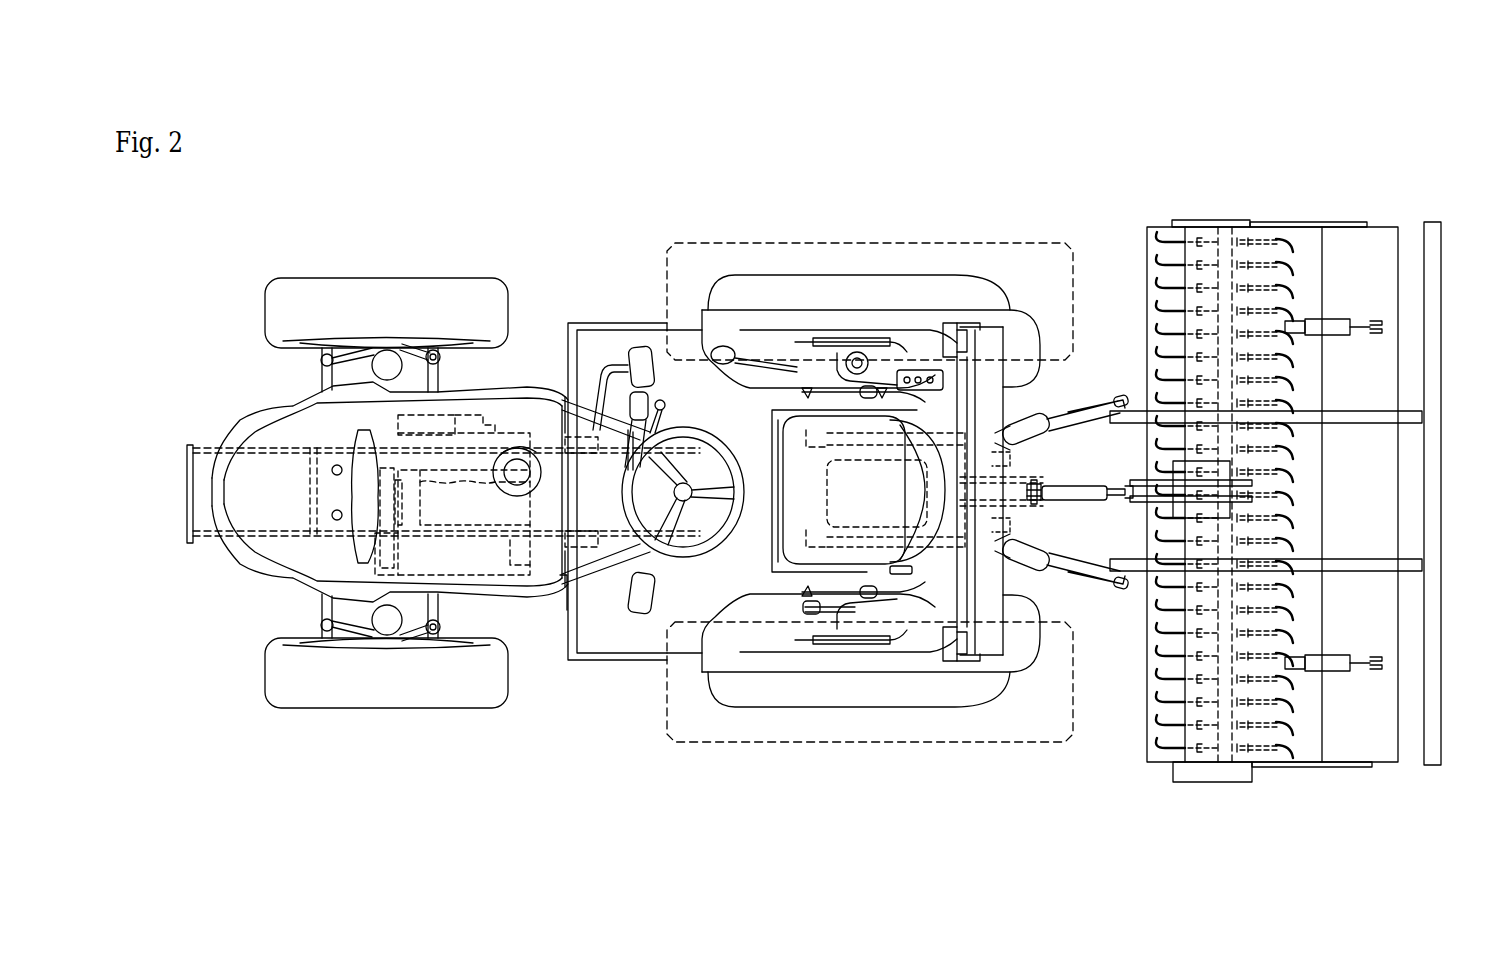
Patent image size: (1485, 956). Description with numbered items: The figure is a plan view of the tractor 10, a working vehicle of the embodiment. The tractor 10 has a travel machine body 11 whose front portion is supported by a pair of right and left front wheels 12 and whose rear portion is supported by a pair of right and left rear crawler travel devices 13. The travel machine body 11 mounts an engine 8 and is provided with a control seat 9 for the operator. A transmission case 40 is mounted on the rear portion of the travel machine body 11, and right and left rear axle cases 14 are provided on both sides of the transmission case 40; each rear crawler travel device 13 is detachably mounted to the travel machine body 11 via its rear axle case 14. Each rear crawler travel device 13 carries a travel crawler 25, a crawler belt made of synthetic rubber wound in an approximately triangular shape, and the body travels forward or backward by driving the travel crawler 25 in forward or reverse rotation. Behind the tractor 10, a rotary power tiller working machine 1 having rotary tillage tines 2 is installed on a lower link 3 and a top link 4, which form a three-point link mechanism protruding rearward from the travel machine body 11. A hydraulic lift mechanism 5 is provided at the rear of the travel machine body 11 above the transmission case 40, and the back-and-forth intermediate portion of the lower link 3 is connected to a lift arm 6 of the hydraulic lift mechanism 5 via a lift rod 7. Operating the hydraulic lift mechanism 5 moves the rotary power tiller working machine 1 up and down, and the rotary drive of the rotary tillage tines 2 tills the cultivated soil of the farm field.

The rotary power tiller working machine 1 is at (1292, 212).
The rotary tillage tine 2 is at (1168, 238).
The lower link 3 is at (1093, 405).
The top link 4 is at (1080, 489).
The hydraulic lift mechanism 5 is at (847, 497).
The lift arm 6 is at (1003, 462).
The lift rod 7 is at (1046, 427).
The engine 8 is at (485, 518).
The control seat 9 is at (784, 423).
The tractor 10 is at (598, 188).
The travel machine body 11 is at (549, 322).
The front wheels 12 is at (378, 292).
The rear crawler travel devices 13 is at (975, 262).
The rear axle case 14 is at (943, 412).
The travel crawler 25 is at (905, 250).
The transmission case 40 is at (818, 443).